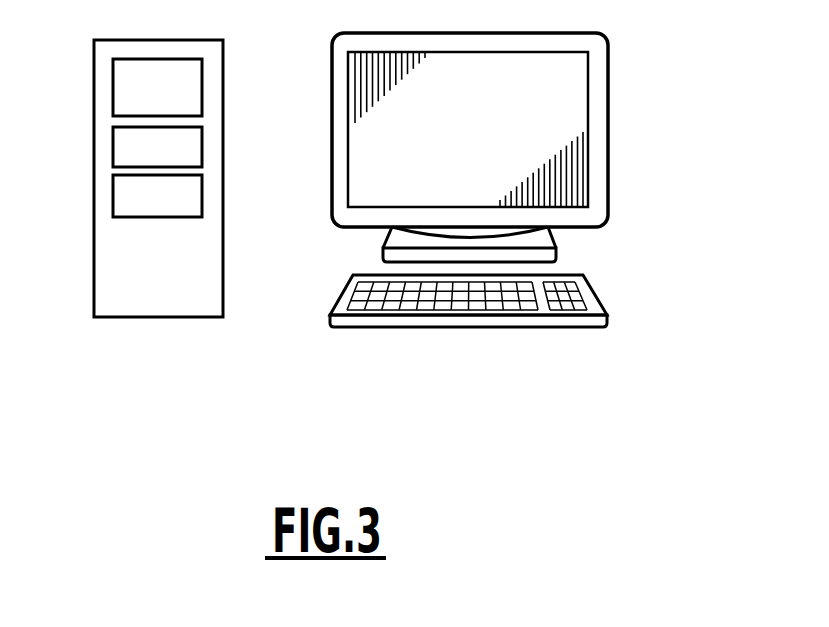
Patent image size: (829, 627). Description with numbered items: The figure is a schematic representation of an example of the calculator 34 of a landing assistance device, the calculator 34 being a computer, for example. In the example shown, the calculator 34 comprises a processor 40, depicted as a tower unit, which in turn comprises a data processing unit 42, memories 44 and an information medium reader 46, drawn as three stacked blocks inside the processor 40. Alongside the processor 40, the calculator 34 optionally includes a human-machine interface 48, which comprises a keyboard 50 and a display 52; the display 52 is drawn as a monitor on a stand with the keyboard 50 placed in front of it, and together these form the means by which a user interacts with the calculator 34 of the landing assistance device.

The calculator 34 is at (114, 385).
The processor 40 is at (108, 292).
The data processing unit 42 is at (203, 87).
The memories 44 is at (203, 146).
The information medium reader 46 is at (203, 194).
The human-machine interface 48 is at (676, 216).
The keyboard 50 is at (598, 288).
The display 52 is at (598, 127).